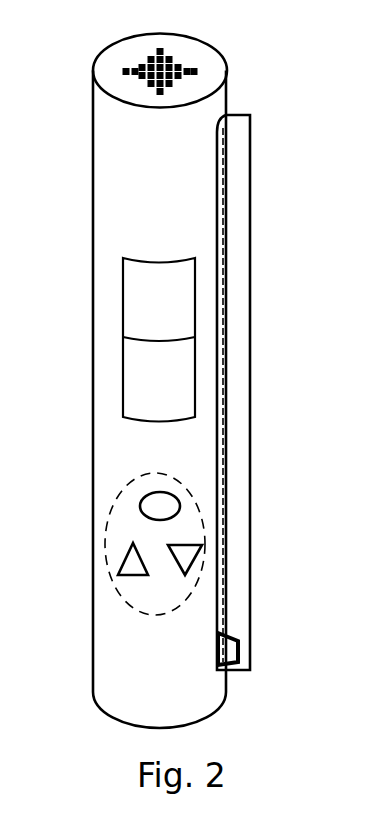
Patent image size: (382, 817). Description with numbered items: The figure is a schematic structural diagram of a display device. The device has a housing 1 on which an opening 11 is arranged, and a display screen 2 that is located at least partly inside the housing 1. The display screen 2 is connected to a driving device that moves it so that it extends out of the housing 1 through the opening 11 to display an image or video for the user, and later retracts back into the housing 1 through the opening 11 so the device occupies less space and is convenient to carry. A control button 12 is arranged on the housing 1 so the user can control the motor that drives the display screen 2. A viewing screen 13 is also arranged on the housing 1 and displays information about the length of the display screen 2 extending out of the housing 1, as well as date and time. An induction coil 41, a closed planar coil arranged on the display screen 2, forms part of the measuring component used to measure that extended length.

The housing 1 is at (108, 132).
The opening 11 is at (215, 182).
The display screen 2 is at (237, 229).
The control button 12 is at (137, 308).
The viewing screen 13 is at (111, 509).
The induction coil 41 is at (213, 626).